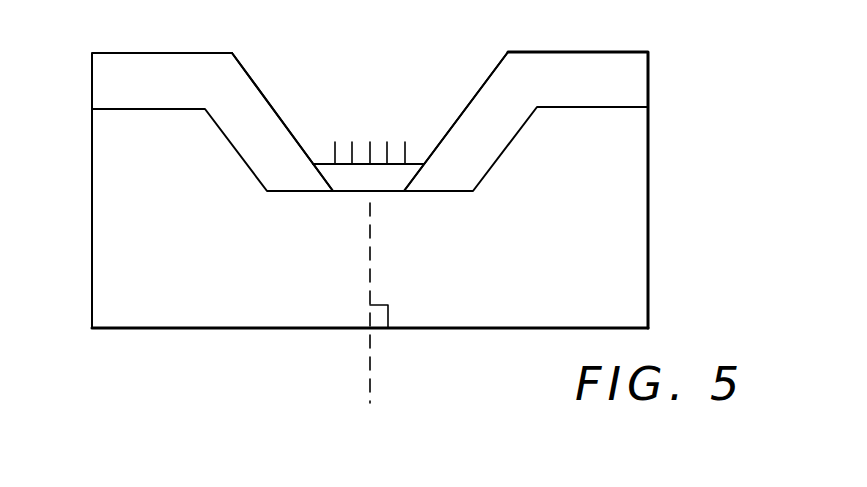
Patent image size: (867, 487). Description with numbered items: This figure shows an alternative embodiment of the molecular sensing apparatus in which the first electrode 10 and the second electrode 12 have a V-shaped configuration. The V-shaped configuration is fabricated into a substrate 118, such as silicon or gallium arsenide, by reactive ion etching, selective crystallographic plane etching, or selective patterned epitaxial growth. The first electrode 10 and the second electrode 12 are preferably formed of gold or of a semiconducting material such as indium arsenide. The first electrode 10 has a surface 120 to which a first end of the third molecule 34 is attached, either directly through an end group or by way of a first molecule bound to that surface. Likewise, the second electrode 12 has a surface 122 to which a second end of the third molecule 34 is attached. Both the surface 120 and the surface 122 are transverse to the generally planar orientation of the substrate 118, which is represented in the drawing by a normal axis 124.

The first electrode 10 is at (92, 82).
The second electrode 12 is at (650, 81).
The third molecule 34 is at (363, 131).
The substrate 118 is at (650, 185).
The surface 120 is at (277, 115).
The surface 122 is at (479, 90).
The normal axis 124 is at (372, 353).